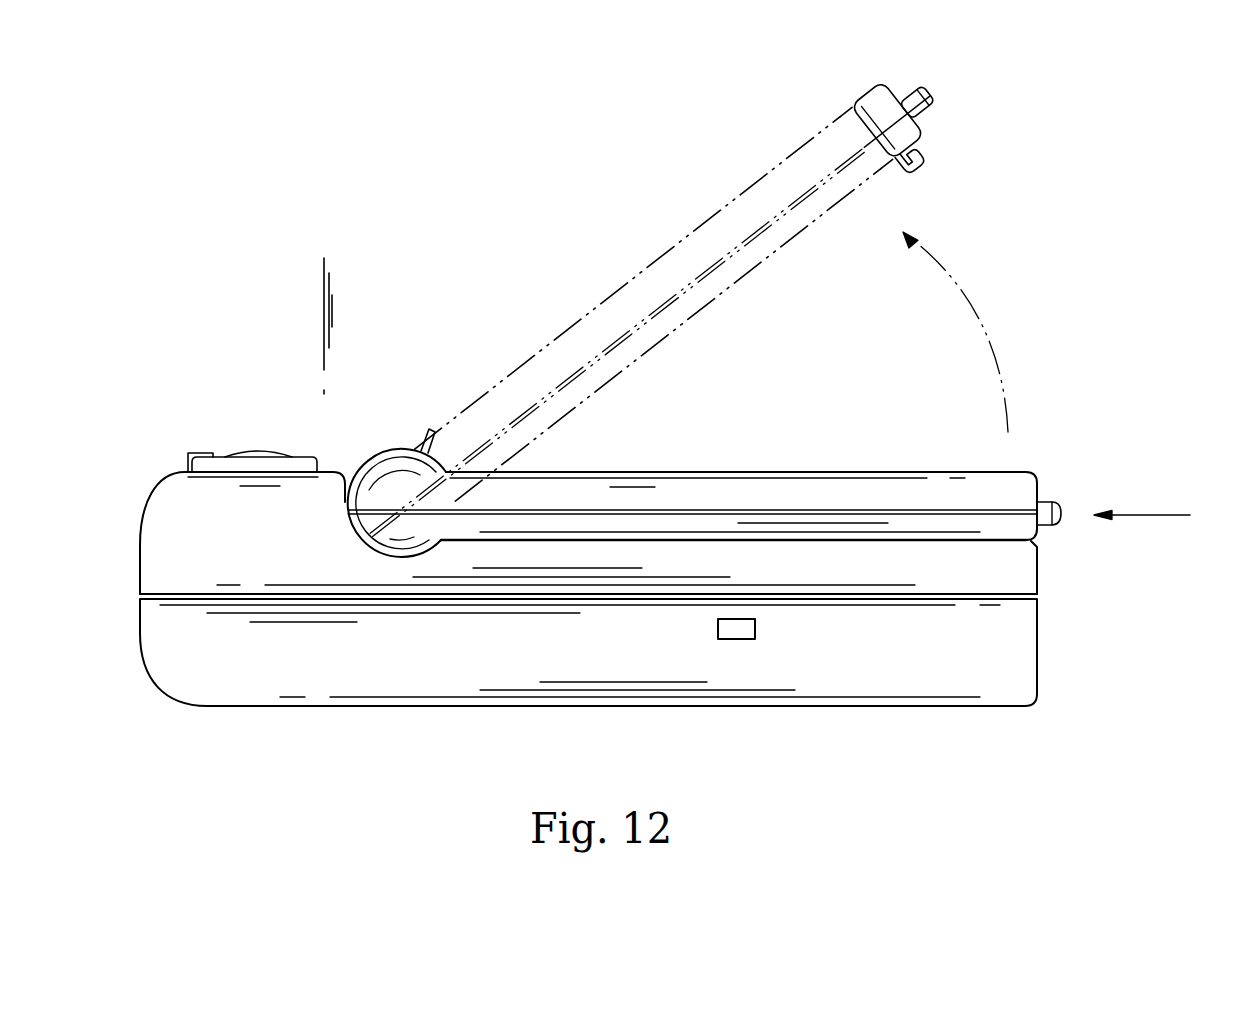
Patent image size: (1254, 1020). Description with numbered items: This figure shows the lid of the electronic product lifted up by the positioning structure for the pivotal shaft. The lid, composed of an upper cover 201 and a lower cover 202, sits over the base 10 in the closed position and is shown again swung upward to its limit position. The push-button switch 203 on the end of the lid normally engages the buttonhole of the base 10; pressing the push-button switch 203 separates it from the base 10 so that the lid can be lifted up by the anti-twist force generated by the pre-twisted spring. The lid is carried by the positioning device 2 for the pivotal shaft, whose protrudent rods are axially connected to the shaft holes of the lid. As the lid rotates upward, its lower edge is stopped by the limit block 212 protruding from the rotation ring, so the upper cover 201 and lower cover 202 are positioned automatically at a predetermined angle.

The base 10 is at (997, 708).
The positioning device 2 is at (1022, 480).
The upper cover 201 is at (710, 220).
The lower cover 202 is at (703, 300).
The push-button switch 203 is at (927, 102).
The limit block 212 is at (430, 433).